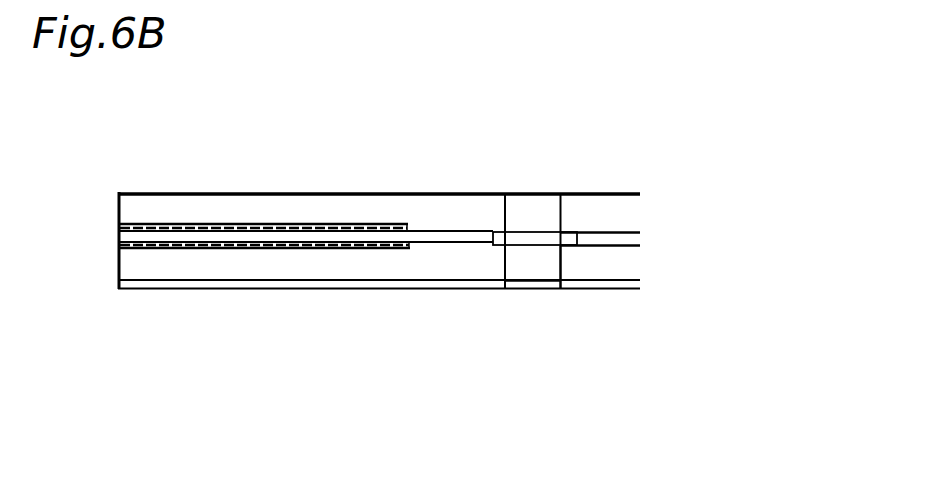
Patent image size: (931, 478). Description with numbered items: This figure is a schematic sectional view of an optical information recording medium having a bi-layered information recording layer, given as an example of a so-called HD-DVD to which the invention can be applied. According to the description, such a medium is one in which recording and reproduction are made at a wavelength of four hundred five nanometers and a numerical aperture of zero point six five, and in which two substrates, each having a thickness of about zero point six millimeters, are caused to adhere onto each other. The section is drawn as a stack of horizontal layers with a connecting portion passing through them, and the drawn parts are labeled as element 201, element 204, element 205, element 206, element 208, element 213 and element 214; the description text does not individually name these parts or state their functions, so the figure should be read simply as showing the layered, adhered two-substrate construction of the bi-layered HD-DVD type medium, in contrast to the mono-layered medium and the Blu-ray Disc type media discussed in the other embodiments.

The substrate 201 is at (215, 268).
The via / connection block 204 is at (485, 285).
The interconnect bar 205 is at (475, 231).
The lower connection portion 206 is at (525, 272).
The upper wiring layer 208 is at (367, 217).
The lower wiring layer 213 is at (192, 250).
The dashed conductive layer 214 is at (283, 227).